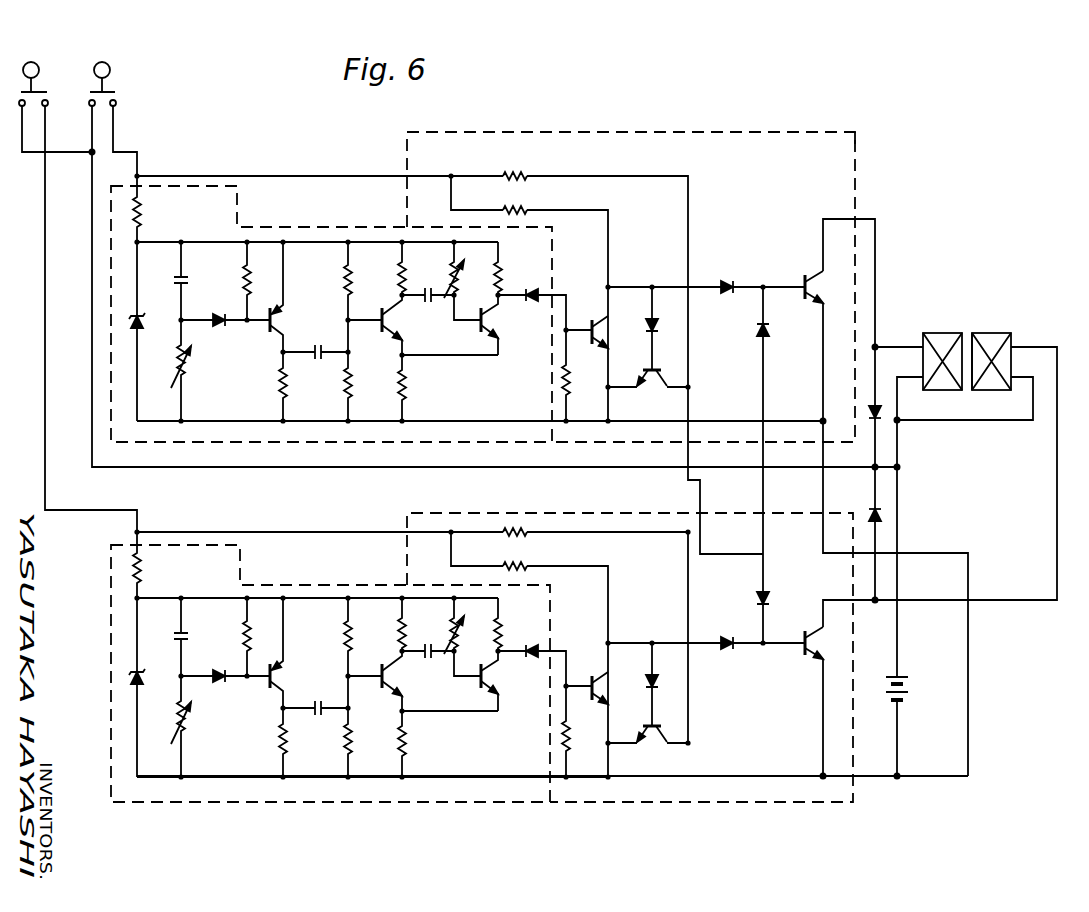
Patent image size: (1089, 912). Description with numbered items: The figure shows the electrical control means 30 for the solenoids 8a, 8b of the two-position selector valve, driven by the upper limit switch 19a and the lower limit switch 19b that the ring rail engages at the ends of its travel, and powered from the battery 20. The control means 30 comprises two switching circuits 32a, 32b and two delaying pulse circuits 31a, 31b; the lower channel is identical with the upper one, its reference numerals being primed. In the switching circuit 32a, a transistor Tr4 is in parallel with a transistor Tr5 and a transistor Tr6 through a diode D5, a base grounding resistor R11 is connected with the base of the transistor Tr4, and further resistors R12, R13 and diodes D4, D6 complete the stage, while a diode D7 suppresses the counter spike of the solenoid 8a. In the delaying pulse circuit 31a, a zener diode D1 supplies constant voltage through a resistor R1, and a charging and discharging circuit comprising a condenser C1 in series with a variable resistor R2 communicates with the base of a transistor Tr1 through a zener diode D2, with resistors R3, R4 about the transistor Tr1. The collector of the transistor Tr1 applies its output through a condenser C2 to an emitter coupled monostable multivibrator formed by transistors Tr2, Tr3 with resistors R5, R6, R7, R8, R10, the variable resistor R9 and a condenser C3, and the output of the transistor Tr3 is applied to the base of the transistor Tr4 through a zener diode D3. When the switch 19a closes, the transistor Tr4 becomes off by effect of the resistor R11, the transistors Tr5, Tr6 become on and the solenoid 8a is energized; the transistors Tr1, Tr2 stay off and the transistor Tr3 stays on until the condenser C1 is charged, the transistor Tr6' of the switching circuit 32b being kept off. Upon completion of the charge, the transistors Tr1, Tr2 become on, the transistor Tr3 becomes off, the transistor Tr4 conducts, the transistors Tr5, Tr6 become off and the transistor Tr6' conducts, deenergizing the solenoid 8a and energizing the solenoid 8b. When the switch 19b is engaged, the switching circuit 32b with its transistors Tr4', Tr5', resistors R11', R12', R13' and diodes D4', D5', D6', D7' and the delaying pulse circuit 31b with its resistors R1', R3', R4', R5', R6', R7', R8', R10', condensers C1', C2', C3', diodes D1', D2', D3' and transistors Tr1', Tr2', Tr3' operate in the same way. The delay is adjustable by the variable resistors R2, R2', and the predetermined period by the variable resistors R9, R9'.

The upper limit switch 19a is at (109, 73).
The limit switch 19b is at (40, 73).
The electrical control means 30 is at (876, 90).
The delaying pulse circuit 31a is at (216, 195).
The delaying pulse circuit 31b is at (214, 553).
The switching circuit 32a is at (622, 148).
The switching circuit 32b is at (603, 530).
The solenoid 8a is at (942, 340).
The solenoid 8b is at (992, 340).
The connecting rod 20 is at (905, 689).
The resistor R1 is at (146, 209).
The variable resistor R2 is at (188, 370).
The resistor R3 is at (257, 281).
The resistor R4 is at (293, 386).
The resistor R5 is at (363, 281).
The resistor R6 is at (358, 370).
The resistor R7 is at (411, 268).
The resistor R8 is at (448, 388).
The variable resistor R9 is at (462, 281).
The resistor R10 is at (509, 268).
The base grounding resistor R11 is at (579, 375).
The resistor R12 is at (515, 166).
The resistor R13 is at (515, 200).
The condenser C1 is at (190, 281).
The condenser C2 is at (315, 343).
The condenser C3 is at (428, 308).
The zener diode D1 is at (144, 331).
The zener diode D2 is at (225, 335).
The zener diode D3 is at (545, 312).
The diode D4 is at (662, 328).
The diode D5 is at (706, 279).
The diode D6 is at (773, 420).
The diode D7 is at (883, 404).
The transistor Tr1 is at (288, 297).
The transistor Tr2 is at (378, 325).
The transistor Tr3 is at (477, 325).
The transistor Tr4 is at (590, 325).
The transistor Tr5 is at (648, 392).
The transistor Tr6 is at (806, 279).
The resistor R1' is at (147, 565).
The variable resistor R2' is at (189, 726).
The resistor R3' is at (258, 637).
The resistor R4' is at (294, 742).
The resistor R5' is at (363, 637).
The resistor R6' is at (359, 726).
The resistor R7' is at (413, 624).
The resistor R8' is at (448, 744).
The variable resistor R9' is at (462, 637).
The resistor R10' is at (510, 624).
The base grounding resistor R11' is at (580, 731).
The resistor R12' is at (515, 521).
The resistor R13' is at (515, 556).
The condenser C1' is at (191, 637).
The condenser C2' is at (315, 698).
The condenser C3' is at (428, 664).
The zener diode D1' is at (146, 687).
The zener diode D2' is at (225, 691).
The zener diode D3' is at (545, 668).
The diode D4' is at (663, 684).
The diode D5' is at (706, 654).
The diode D6' is at (774, 598).
The diode D7' is at (884, 531).
The transistor Tr1' is at (289, 653).
The transistor Tr2' is at (378, 681).
The transistor Tr3' is at (477, 681).
The transistor Tr4' is at (590, 680).
The transistor Tr5' is at (648, 748).
The transistor Tr6' is at (802, 651).